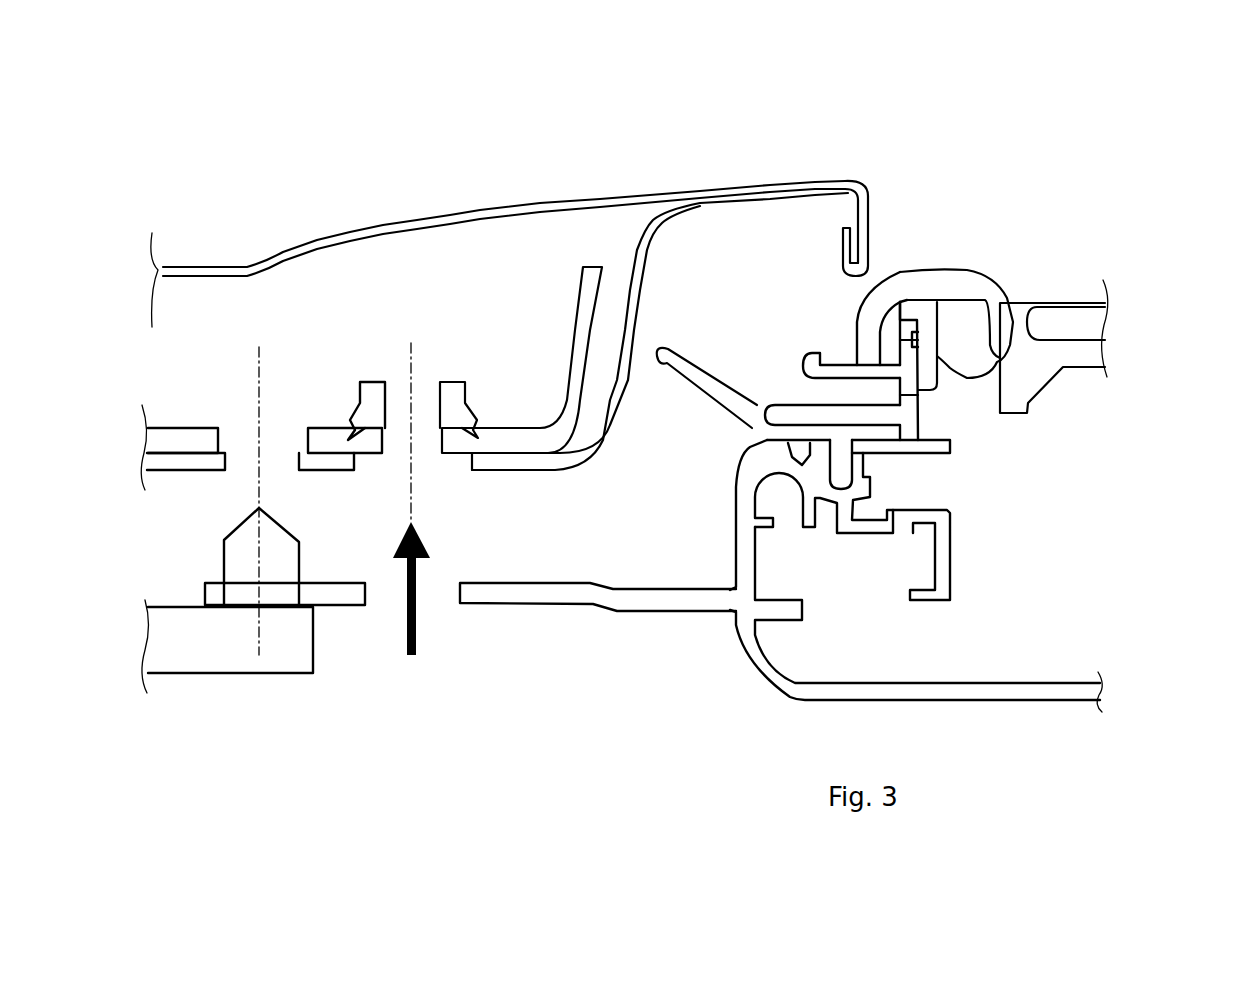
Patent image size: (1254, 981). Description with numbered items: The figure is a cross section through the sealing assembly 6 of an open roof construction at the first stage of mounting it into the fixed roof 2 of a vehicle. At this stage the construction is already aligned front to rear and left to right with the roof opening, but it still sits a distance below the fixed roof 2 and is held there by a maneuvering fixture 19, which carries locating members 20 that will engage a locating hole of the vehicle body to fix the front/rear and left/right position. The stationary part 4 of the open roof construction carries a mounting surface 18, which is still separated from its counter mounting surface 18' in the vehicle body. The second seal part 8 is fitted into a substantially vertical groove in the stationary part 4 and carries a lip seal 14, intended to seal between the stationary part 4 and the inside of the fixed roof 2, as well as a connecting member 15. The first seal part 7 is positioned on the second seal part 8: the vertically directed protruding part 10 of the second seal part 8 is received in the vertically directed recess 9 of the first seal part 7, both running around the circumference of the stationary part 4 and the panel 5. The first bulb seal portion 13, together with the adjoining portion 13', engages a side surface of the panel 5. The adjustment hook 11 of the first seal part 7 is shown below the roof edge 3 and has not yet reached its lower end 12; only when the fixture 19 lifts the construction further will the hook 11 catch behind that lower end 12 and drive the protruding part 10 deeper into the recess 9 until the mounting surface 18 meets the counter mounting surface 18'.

The fixed roof 2 is at (790, 184).
The roof edge 3 is at (878, 222).
The stationary part 4 is at (749, 512).
The panel 5 is at (1088, 302).
The sealing assembly 6 is at (708, 413).
The first seal part 7 is at (970, 311).
The second seal part 8 is at (800, 433).
The recess 9 is at (910, 347).
The protruding part 10 is at (907, 405).
The adjustment hook 11 is at (688, 362).
The lower end 12 is at (848, 277).
The first bulb seal portion 13 is at (968, 210).
The curved arm 13' is at (873, 241).
The lip seal 14 is at (847, 360).
The connecting member 15 is at (843, 470).
The mounting surface 18 is at (589, 690).
The counter mounting surface 18' is at (521, 265).
The maneuvering fixture 19 is at (193, 650).
The locating members 20 is at (270, 573).